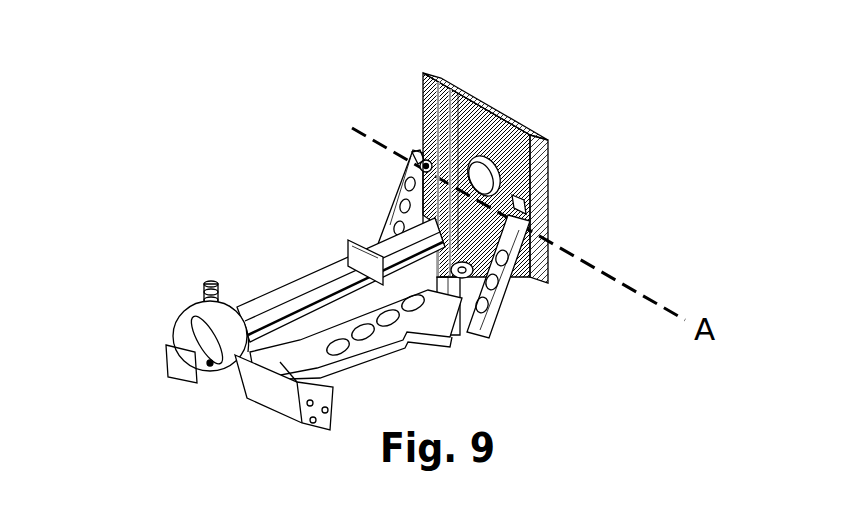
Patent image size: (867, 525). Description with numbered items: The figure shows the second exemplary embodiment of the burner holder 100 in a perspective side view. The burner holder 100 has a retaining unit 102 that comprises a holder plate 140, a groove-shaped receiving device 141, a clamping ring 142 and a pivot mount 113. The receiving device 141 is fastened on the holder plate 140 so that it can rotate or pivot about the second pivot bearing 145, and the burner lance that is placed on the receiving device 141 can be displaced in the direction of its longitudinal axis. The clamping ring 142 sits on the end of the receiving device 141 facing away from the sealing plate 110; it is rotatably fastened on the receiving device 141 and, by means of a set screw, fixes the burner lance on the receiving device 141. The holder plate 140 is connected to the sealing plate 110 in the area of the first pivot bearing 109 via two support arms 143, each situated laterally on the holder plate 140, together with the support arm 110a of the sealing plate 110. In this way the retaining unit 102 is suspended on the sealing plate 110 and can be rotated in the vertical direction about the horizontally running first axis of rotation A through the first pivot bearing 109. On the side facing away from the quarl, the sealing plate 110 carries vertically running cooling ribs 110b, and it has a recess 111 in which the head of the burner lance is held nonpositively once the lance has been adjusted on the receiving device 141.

The burner holder 100 is at (160, 176).
The retaining unit 102 is at (337, 230).
The pivot bearing 109 is at (420, 166).
The sealing plate 110 is at (490, 107).
The support arm 110a is at (415, 150).
The cooling rib 110b is at (457, 135).
The recess 111 is at (487, 177).
The pivot mount 113 is at (260, 383).
The holder plate 140 is at (367, 358).
The receiving device 141 is at (307, 277).
The clamping ring 142 is at (186, 308).
The support arm 143 is at (500, 295).
The second axis of rotation 145 is at (462, 275).